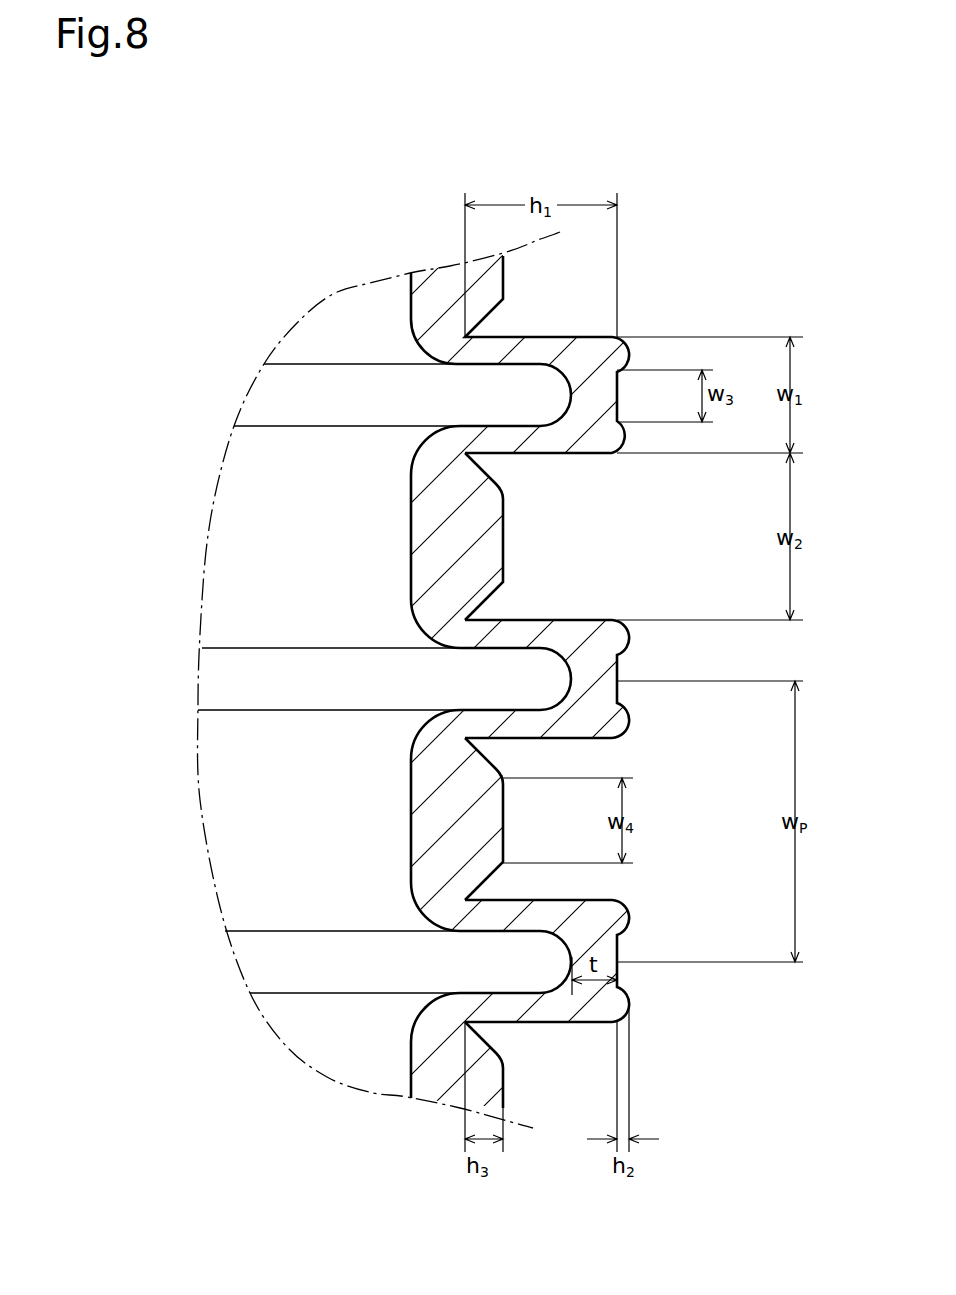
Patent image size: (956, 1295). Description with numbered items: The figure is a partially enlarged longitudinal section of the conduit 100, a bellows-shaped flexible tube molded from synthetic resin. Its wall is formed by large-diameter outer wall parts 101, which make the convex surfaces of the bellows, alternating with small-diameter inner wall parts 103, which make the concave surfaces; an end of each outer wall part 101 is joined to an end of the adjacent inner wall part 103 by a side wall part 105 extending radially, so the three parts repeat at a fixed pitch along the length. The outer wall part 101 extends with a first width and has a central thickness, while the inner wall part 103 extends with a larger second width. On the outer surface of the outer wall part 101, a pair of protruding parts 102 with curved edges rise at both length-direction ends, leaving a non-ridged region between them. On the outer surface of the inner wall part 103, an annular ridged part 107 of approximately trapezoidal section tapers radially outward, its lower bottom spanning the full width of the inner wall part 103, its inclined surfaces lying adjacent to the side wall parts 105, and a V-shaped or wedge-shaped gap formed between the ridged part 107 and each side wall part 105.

The conduit 100 is at (311, 1085).
The outer wall part 101 is at (598, 396).
The protruding part 102 is at (621, 636).
The inner wall part 103 is at (455, 530).
The side wall part 105 is at (538, 346).
The ridged part 107 is at (507, 540).